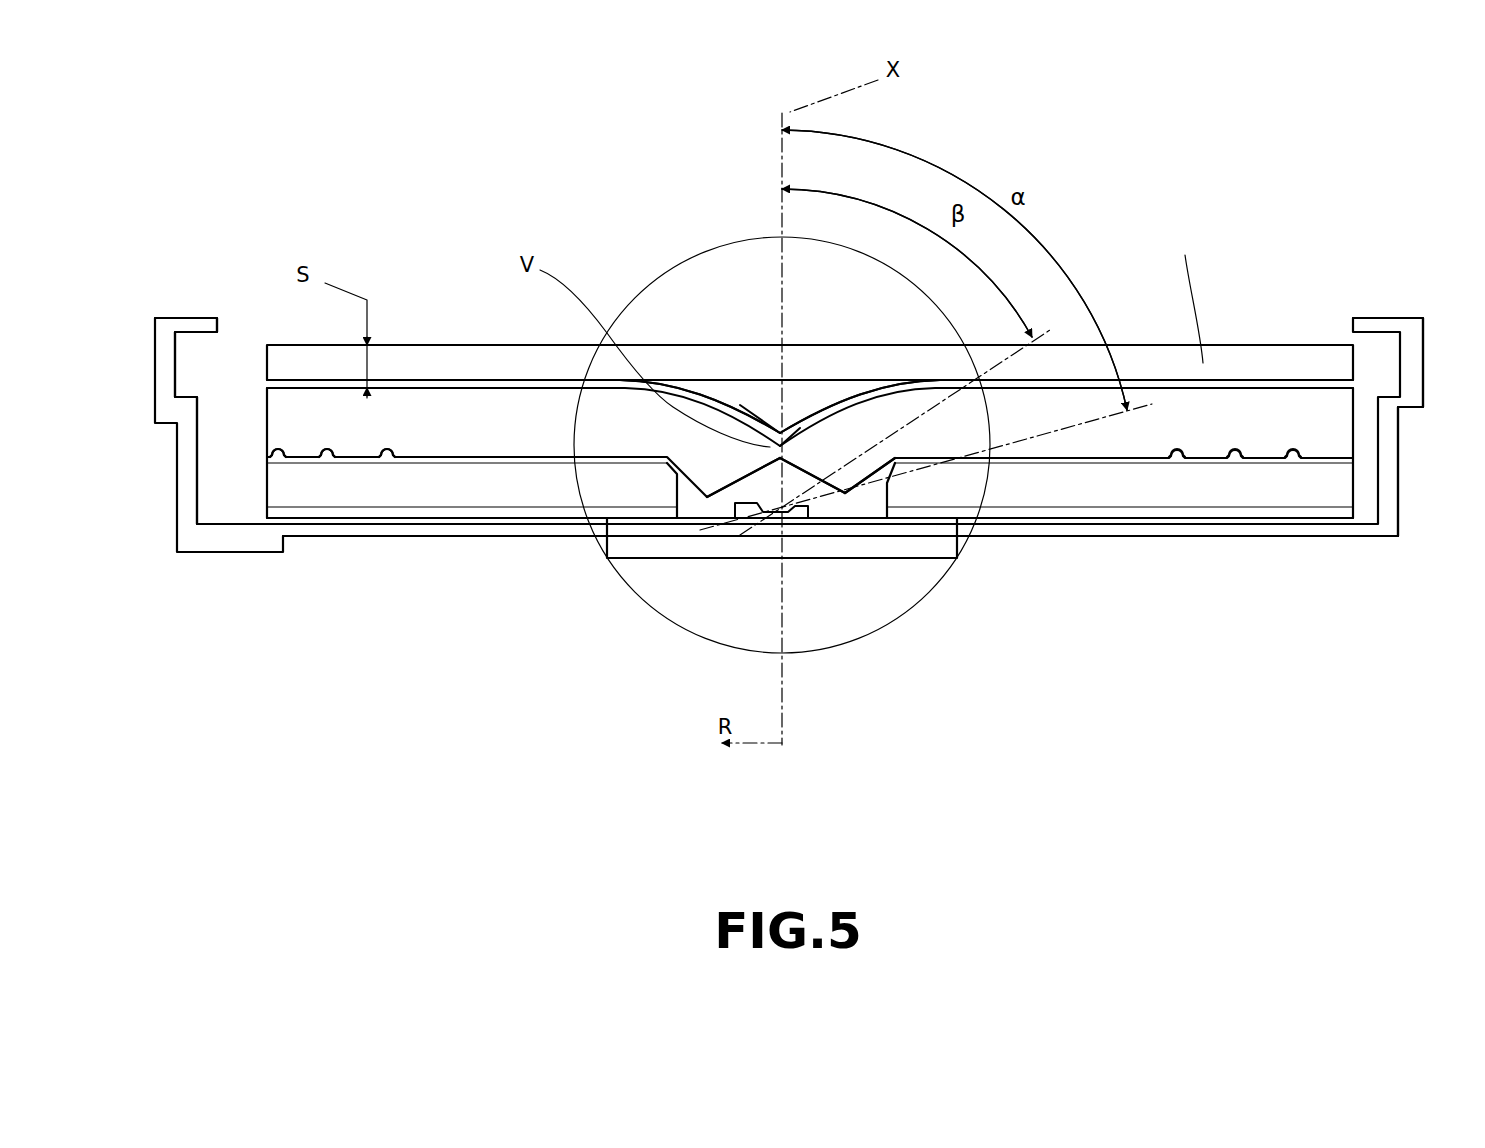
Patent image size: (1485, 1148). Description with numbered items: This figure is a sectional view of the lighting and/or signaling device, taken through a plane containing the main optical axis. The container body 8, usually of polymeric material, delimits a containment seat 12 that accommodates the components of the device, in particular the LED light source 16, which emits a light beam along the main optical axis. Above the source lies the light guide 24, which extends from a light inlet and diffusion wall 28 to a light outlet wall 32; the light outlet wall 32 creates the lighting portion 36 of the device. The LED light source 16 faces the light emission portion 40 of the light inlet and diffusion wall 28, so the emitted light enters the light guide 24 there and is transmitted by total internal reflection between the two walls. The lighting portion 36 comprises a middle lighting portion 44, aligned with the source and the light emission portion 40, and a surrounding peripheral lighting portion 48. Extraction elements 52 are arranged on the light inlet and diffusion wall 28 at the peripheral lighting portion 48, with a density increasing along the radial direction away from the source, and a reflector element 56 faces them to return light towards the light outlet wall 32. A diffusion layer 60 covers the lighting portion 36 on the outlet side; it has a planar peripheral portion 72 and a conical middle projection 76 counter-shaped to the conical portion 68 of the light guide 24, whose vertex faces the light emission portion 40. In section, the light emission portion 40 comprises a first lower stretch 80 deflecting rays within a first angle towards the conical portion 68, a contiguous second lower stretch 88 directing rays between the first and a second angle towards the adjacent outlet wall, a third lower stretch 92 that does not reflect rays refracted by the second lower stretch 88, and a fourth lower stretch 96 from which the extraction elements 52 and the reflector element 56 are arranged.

The container body 8 is at (173, 463).
The containment seat 12 is at (240, 393).
The LED light source 16 is at (778, 520).
The light guide 24 is at (1320, 417).
The light inlet and diffusion wall 28 is at (1332, 470).
The light outlet wall 32 is at (1157, 377).
The lighting portion 36 is at (810, 417).
The light emission portion 40 is at (771, 481).
The middle lighting portion 44 is at (845, 391).
The peripheral lighting portion 48 is at (1007, 374).
The extraction elements 52 is at (278, 470).
The reflector element 56 is at (832, 486).
The diffusion layer 60 is at (810, 372).
The conical portion 68 is at (731, 426).
The planar peripheral portion 72 is at (507, 367).
The conical middle projection 76 is at (760, 389).
The first lower stretch 80 is at (800, 450).
The second lower stretch 88 is at (790, 476).
The third lower stretch 92 is at (843, 503).
The fourth lower stretch 96 is at (990, 462).